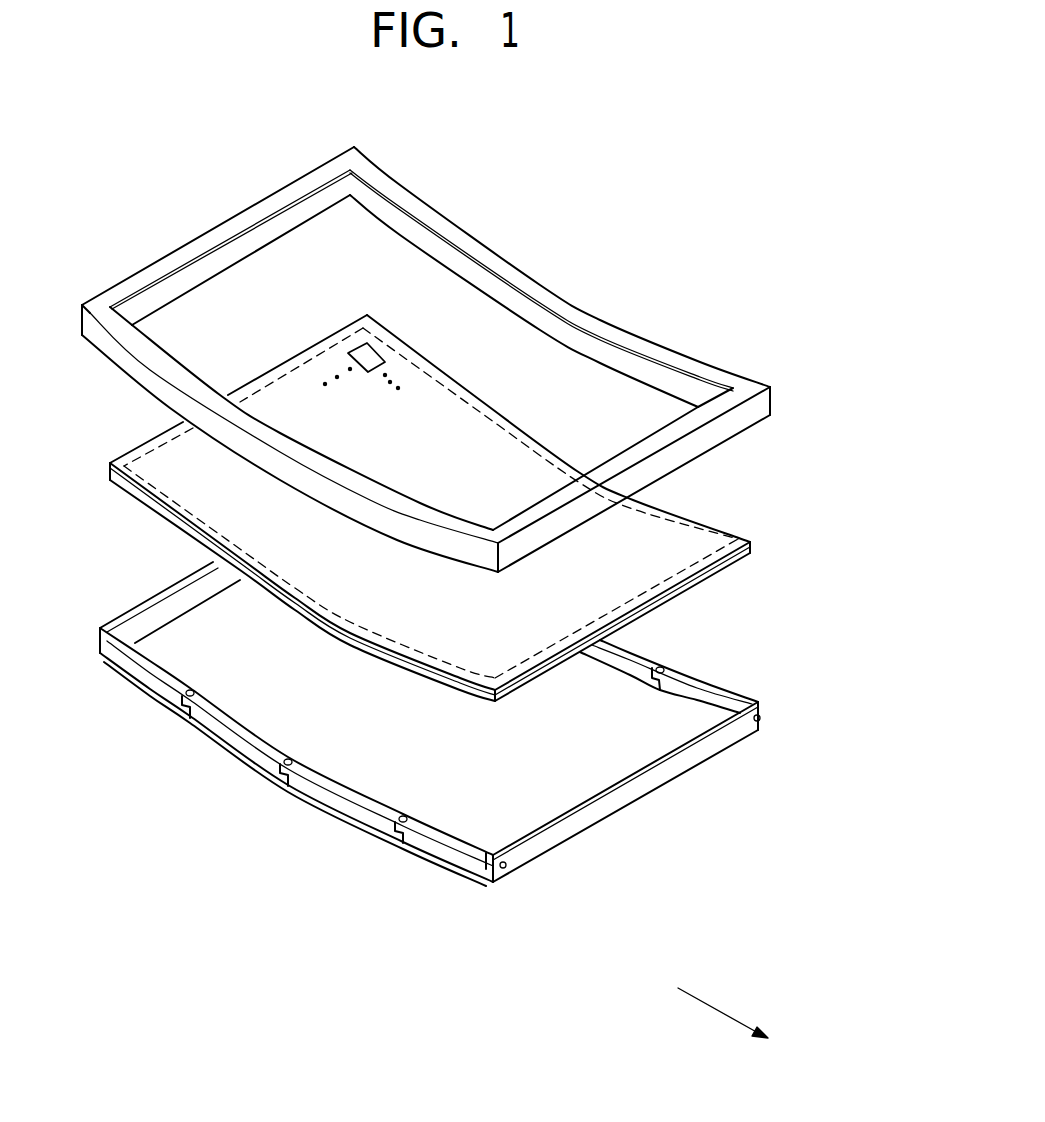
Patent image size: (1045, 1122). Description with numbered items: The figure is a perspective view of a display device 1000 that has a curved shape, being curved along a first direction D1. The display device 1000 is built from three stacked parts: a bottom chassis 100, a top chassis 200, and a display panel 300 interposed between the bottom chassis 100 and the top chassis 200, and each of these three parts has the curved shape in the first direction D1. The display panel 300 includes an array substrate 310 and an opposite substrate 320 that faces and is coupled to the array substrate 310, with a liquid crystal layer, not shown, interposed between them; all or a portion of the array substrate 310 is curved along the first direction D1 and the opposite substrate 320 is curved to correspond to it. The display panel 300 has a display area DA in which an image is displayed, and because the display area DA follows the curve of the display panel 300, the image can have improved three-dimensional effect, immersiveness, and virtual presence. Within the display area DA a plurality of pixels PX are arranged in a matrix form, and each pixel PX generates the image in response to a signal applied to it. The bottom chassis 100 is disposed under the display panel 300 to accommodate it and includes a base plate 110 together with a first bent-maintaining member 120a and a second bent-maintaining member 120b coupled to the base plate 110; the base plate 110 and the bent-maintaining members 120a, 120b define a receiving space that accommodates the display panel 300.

The display device 1000 is at (716, 245).
The top chassis 200 is at (762, 398).
The display panel 300 is at (847, 503).
The opposite substrate 320 is at (740, 537).
The array substrate 310 is at (752, 551).
The display area DA is at (683, 540).
The pixel PX is at (365, 344).
The bottom chassis 100 is at (703, 789).
The base plate 110 is at (553, 793).
The first bent-maintaining member 120a is at (724, 690).
The second bent-maintaining member 120b is at (475, 840).
The first direction D1 is at (738, 1028).